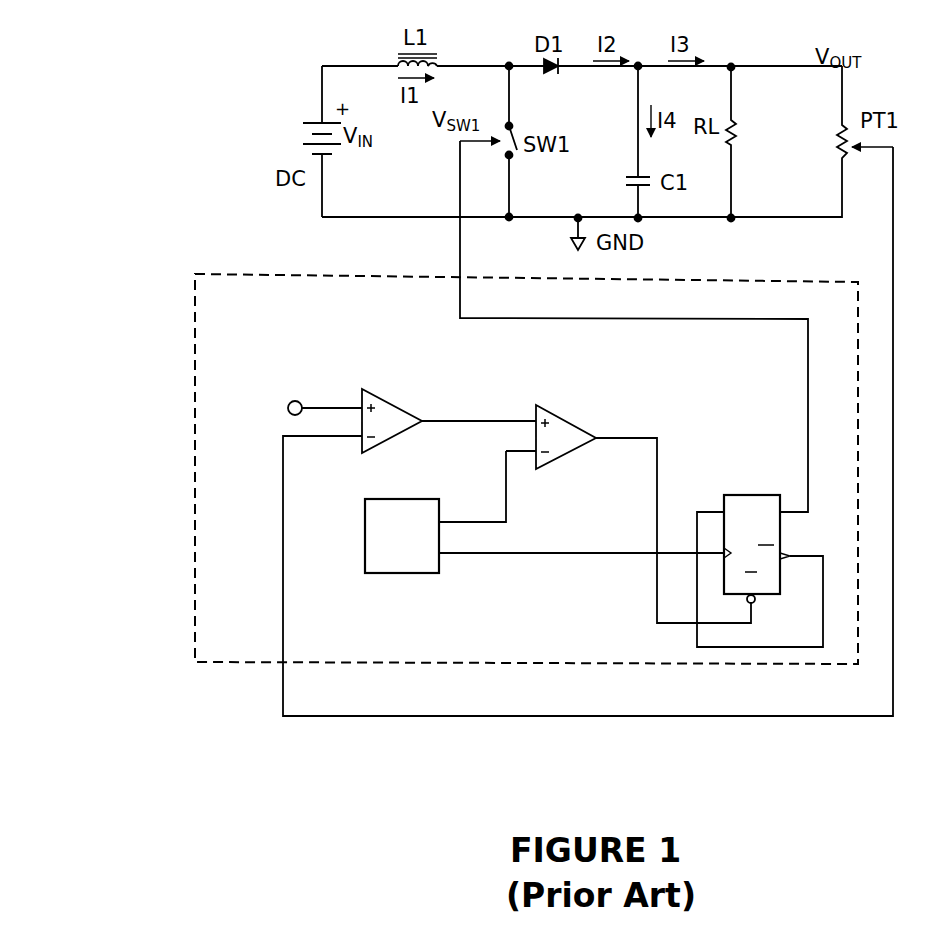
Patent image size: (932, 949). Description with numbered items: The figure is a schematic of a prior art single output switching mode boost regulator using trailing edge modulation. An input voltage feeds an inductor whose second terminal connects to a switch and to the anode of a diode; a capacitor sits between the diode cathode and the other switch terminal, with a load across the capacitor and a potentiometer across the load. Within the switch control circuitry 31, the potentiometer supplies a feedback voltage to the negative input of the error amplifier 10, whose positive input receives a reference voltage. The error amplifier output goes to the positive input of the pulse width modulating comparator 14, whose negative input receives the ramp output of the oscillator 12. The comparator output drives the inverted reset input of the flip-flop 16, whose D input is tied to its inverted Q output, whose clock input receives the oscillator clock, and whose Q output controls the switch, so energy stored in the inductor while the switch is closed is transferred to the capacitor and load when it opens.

The switch control circuitry 31 is at (242, 264).
The error amplifier 10 is at (392, 396).
The pulse width modulating comparator 14 is at (565, 462).
The oscillator 12 is at (354, 532).
The flip-flop 16 is at (760, 486).